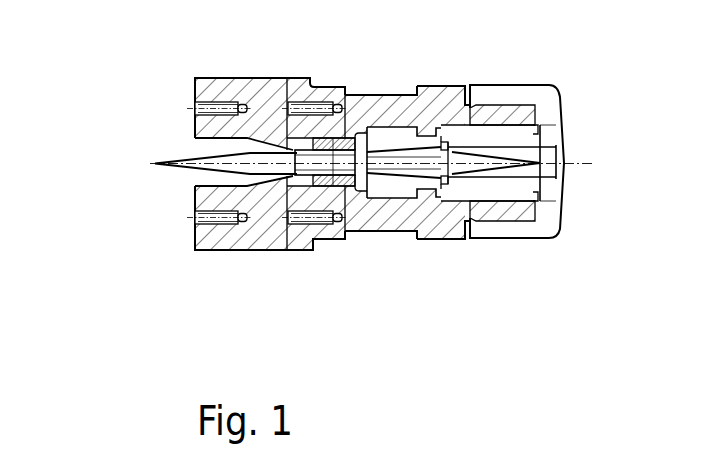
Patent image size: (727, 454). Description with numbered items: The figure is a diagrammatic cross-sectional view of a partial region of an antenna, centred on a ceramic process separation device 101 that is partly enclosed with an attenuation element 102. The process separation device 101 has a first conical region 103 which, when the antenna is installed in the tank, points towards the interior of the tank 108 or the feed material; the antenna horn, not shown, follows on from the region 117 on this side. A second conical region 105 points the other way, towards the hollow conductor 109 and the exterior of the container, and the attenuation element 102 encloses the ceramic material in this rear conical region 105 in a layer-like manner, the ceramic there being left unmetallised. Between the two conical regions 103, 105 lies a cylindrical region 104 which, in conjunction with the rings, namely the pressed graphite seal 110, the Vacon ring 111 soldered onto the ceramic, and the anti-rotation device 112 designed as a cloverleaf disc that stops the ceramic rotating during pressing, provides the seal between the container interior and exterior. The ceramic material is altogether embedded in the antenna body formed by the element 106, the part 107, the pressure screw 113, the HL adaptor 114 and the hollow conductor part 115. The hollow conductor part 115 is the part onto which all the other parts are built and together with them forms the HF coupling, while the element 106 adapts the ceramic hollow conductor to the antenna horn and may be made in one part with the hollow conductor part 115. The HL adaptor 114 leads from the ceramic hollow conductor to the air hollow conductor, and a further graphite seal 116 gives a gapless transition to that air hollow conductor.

The process separation device 101 is at (347, 160).
The attenuation element 102 is at (385, 182).
The first conical region 103 is at (177, 160).
The cylindrical region 104 is at (308, 160).
The second conical region 105 is at (478, 152).
The element adapting the ceramic hollow conductor to the antenna horn 106 is at (233, 236).
The antenna body part 107 is at (547, 208).
The interior of the tank 108 is at (93, 173).
The hollow conductor 109 is at (553, 150).
The graphite seal 110 is at (327, 187).
The Vacon ring 111 is at (357, 176).
The anti-rotation device 112 is at (360, 135).
The pressure screw 113 is at (421, 182).
The HL adaptor 114 is at (523, 188).
The hollow conductor part 115 is at (433, 103).
The graphite seal 116 is at (440, 186).
The region followed by the antenna horn 117 is at (193, 193).